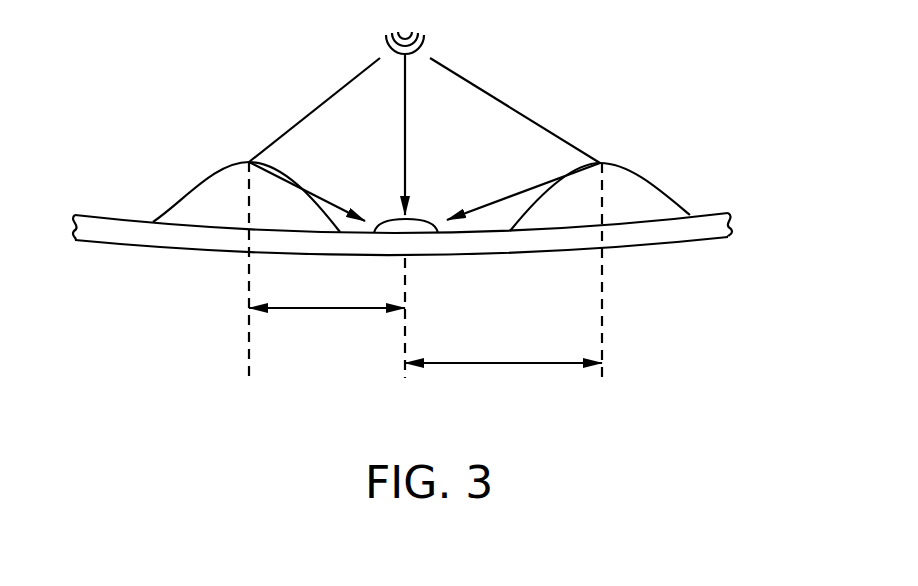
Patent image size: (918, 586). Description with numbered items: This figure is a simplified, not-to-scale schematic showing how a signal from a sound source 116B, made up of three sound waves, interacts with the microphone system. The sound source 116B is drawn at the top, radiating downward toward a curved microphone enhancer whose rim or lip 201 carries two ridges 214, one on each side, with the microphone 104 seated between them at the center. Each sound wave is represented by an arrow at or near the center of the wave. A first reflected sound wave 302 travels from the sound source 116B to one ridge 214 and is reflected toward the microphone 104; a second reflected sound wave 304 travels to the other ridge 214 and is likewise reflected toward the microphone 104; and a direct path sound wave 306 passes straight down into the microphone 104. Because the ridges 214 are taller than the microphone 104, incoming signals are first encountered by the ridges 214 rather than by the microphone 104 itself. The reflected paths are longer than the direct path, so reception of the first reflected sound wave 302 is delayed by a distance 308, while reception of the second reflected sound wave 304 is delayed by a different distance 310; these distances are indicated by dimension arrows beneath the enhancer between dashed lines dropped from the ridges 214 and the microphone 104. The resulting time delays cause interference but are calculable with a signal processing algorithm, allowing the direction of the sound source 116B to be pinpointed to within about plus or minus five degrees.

The sound source 116B is at (432, 44).
The first reflected sound wave 302 is at (323, 100).
The second reflected sound wave 304 is at (508, 101).
The direct path sound wave 306 is at (408, 130).
The ridges 214 is at (200, 180).
The microphone 104 is at (392, 218).
The rim or lip 201 is at (710, 220).
The distance 308 is at (325, 311).
The distance 310 is at (505, 366).